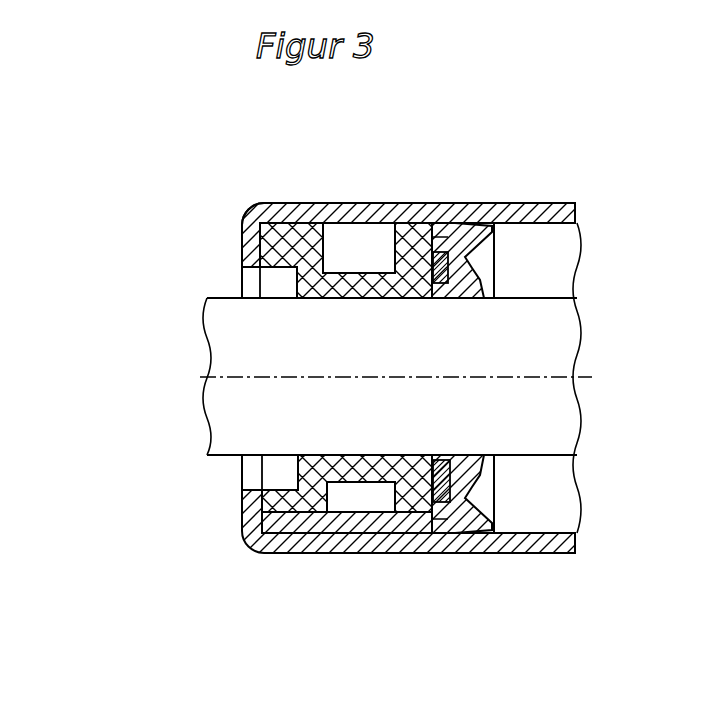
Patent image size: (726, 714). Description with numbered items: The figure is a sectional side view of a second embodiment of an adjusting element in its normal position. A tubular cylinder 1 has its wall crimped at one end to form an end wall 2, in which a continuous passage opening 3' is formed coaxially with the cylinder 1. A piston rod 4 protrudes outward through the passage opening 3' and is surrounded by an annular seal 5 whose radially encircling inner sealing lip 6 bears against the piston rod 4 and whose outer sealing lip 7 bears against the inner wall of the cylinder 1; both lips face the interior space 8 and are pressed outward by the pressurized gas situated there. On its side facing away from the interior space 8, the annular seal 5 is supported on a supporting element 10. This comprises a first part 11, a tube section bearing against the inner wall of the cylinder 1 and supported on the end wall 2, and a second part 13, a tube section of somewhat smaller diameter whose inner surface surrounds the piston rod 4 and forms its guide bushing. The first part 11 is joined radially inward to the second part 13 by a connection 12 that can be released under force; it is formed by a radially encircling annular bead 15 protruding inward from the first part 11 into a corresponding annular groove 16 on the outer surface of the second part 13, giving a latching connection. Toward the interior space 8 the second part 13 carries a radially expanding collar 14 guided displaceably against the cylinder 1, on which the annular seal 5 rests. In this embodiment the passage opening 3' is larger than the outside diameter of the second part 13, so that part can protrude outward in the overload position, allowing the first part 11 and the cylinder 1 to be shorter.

The tubular cylinder 1 is at (285, 204).
The end wall 2 is at (250, 247).
The passage opening 3' is at (195, 371).
The piston rod 4 is at (227, 425).
The annular seal 5 is at (470, 203).
The inner sealing lip 6 is at (494, 297).
The outer sealing lip 7 is at (455, 237).
The interior space 8 is at (550, 508).
The supporting element 10 is at (313, 203).
The first part 11 is at (268, 229).
The connection 12 is at (307, 268).
The second part 13 is at (362, 273).
The collar 14 is at (413, 245).
The annular bead 15 is at (312, 512).
The annular groove 16 is at (308, 482).